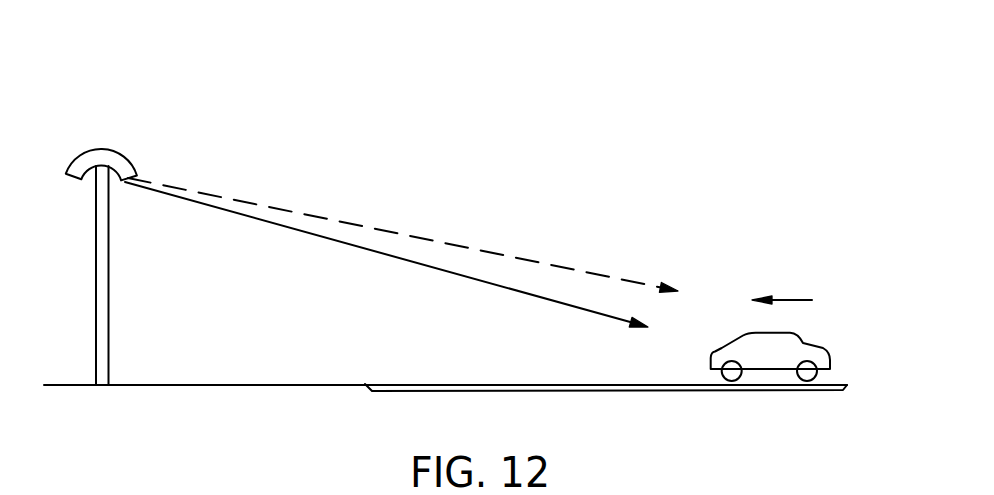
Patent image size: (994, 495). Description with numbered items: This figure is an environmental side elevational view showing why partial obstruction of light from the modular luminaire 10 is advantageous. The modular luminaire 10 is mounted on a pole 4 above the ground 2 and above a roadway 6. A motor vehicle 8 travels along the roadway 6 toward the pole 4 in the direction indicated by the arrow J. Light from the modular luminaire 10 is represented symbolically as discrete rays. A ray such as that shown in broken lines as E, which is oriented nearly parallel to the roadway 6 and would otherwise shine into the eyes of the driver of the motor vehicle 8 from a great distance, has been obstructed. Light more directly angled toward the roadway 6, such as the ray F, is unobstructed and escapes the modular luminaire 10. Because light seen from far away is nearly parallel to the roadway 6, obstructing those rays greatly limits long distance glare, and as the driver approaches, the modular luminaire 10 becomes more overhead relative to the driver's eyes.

The ground 2 is at (240, 384).
The pole 4 is at (108, 267).
The roadway 6 is at (498, 385).
The motor vehicle 8 is at (805, 340).
The modular luminaire 10 is at (138, 229).
The ray E is at (503, 254).
The ray F is at (428, 266).
The arrow J is at (795, 300).